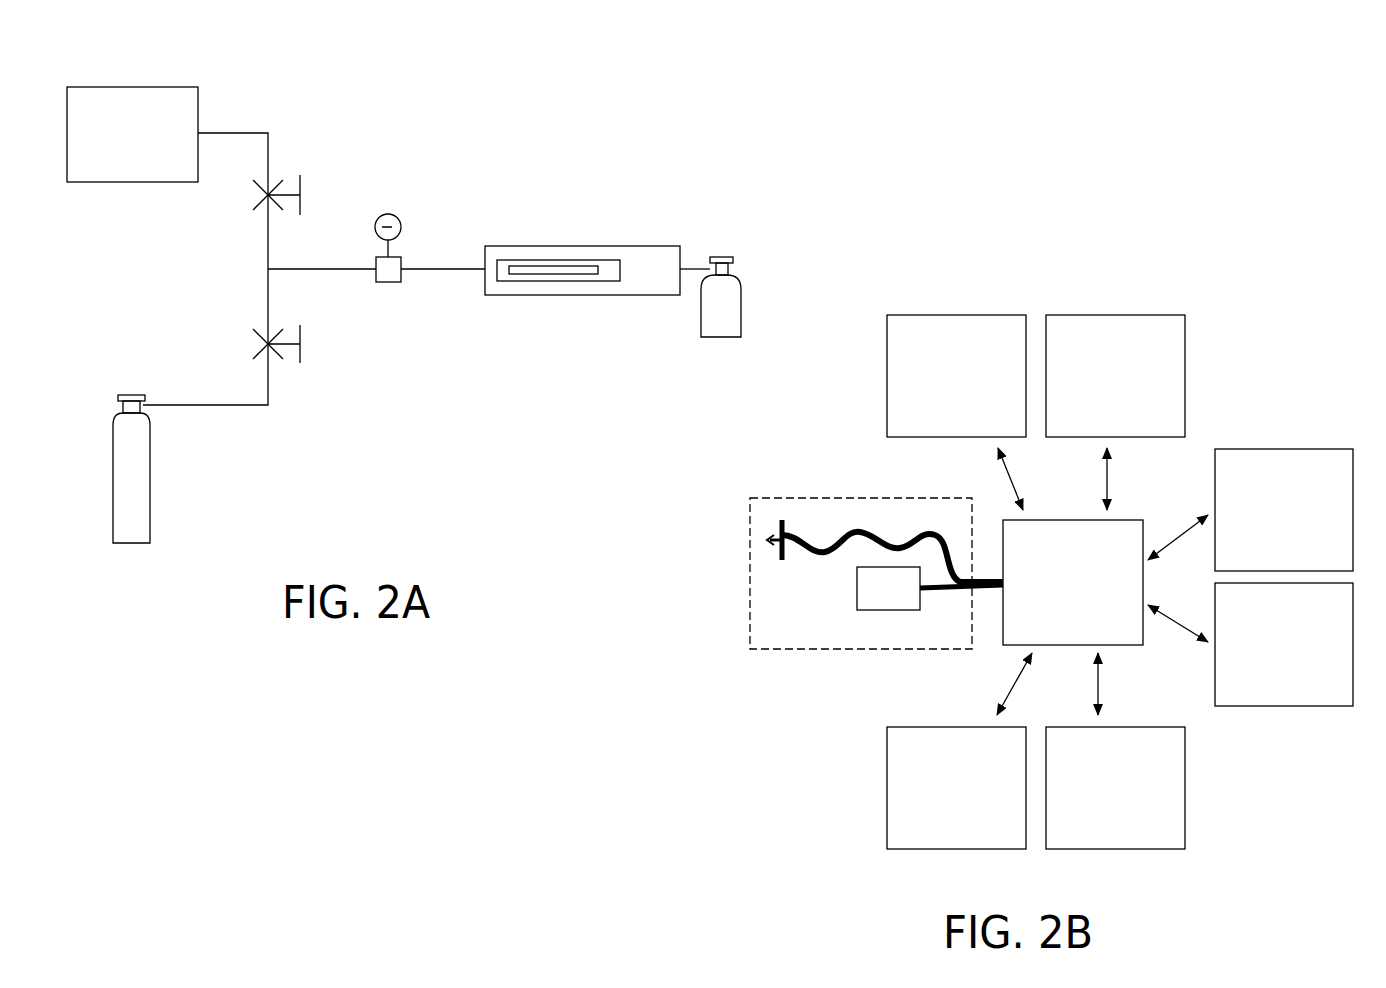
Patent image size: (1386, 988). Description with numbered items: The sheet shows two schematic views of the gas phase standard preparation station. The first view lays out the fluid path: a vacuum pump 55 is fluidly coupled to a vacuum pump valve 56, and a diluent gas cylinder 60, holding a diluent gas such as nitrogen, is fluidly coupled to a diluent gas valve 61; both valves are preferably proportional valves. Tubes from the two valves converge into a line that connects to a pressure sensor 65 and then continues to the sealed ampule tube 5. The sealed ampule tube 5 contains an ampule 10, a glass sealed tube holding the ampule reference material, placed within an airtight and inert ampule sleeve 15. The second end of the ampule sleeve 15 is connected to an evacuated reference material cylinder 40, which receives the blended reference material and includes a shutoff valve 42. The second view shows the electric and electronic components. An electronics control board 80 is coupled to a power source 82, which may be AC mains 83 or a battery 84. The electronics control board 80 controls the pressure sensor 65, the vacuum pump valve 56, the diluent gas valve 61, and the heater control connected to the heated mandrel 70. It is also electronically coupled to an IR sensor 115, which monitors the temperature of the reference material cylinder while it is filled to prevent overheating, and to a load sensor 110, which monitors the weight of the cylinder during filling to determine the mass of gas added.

In FIG. 2A, the sealed ampule tube 5 is at (665, 248).
In FIG. 2A, the ampule 10 is at (548, 268).
In FIG. 2A, the ampule sleeve 15 is at (605, 270).
In FIG. 2A, the reference material cylinder 40 is at (712, 330).
In FIG. 2A, the shutoff valve 42 is at (725, 257).
In FIG. 2A, the vacuum pump 55 is at (127, 87).
In FIG. 2A, the vacuum pump valve 56 is at (302, 185).
In FIG. 2B, the vacuum pump valve 56 is at (1271, 657).
In FIG. 2A, the diluent gas cylinder 60 is at (140, 525).
In FIG. 2A, the diluent gas valve 61 is at (302, 353).
In FIG. 2B, the diluent gas valve 61 is at (1101, 802).
In FIG. 2A, the pressure sensor 65 is at (388, 282).
In FIG. 2B, the pressure sensor 65 is at (943, 802).
In FIG. 2B, the heated mandrel 70 is at (1271, 524).
In FIG. 2B, the electronics control board 80 is at (1058, 597).
In FIG. 2B, the power source 82 is at (842, 498).
In FIG. 2B, the AC mains 83 is at (925, 530).
In FIG. 2B, the battery 84 is at (874, 601).
In FIG. 2B, the load sensor 110 is at (1096, 390).
In FIG. 2B, the IR sensor 115 is at (938, 390).